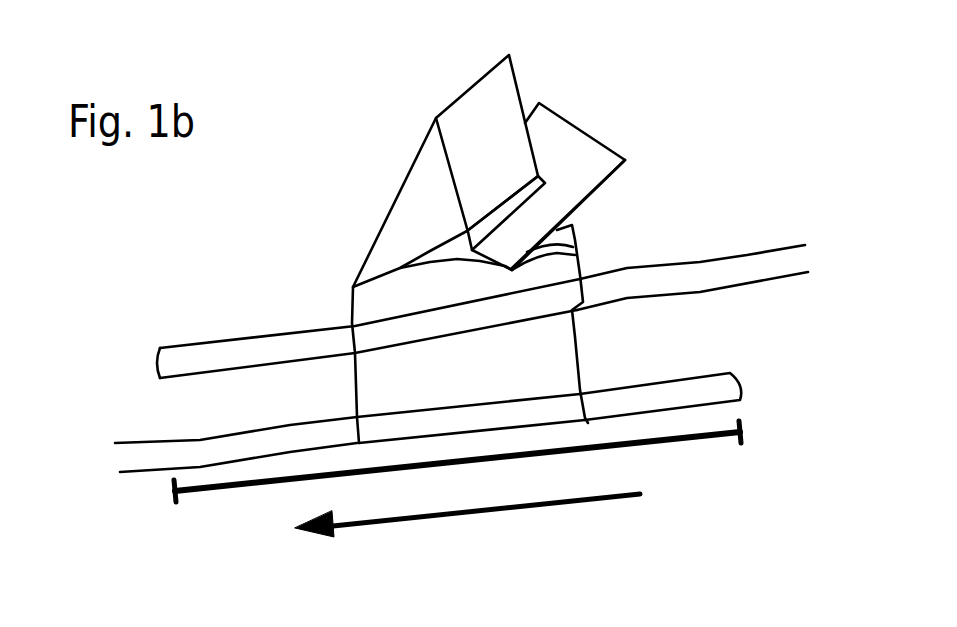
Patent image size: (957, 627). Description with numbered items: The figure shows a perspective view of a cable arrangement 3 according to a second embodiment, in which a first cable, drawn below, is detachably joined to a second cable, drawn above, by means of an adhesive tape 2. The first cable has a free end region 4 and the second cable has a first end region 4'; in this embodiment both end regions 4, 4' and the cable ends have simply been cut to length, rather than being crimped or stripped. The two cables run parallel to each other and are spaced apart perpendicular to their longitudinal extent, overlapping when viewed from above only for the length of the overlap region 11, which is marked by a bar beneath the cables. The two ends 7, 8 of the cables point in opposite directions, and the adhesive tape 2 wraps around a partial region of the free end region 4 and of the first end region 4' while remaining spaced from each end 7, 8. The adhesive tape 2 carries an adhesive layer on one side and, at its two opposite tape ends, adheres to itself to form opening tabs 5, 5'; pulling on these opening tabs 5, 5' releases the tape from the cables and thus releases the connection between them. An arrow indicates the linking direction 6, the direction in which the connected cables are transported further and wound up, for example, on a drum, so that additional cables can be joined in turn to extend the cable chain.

The adhesive tape 2 is at (383, 242).
The cable arrangement 3 is at (330, 128).
The free end region 4 is at (333, 480).
The first end region 4' is at (692, 237).
The opening tab 5 is at (459, 147).
The opening tab 5' is at (615, 185).
The linking direction 6 is at (510, 505).
The end 7 is at (786, 378).
The end 8 is at (153, 306).
The overlap region 11 is at (223, 490).